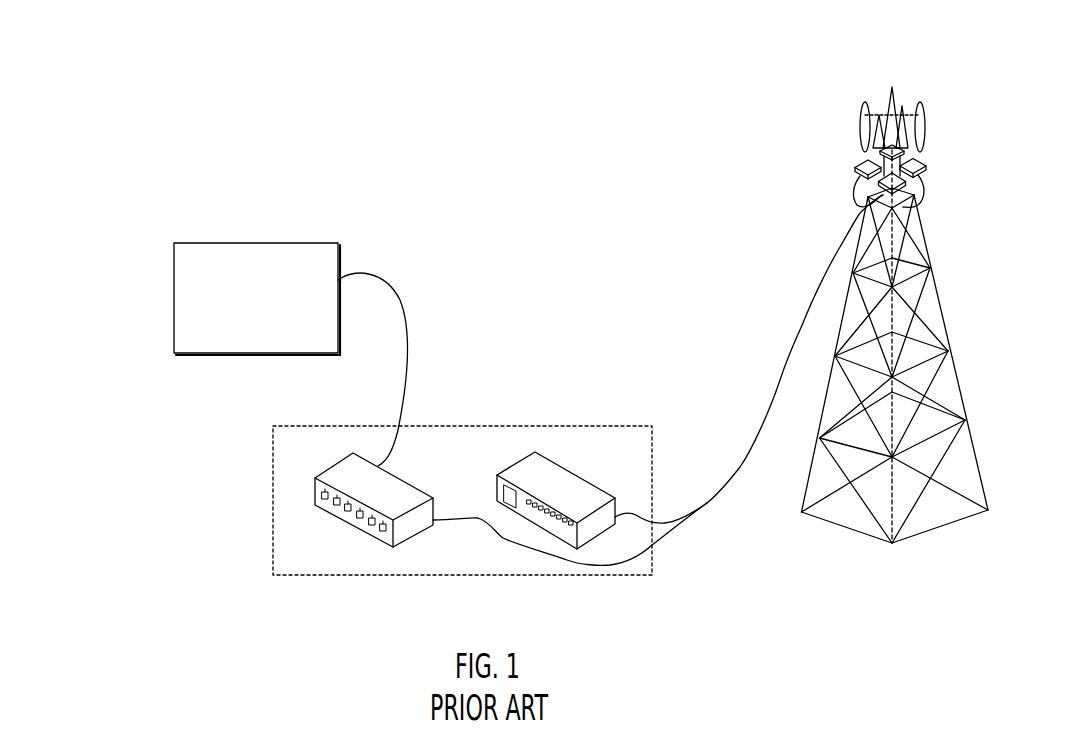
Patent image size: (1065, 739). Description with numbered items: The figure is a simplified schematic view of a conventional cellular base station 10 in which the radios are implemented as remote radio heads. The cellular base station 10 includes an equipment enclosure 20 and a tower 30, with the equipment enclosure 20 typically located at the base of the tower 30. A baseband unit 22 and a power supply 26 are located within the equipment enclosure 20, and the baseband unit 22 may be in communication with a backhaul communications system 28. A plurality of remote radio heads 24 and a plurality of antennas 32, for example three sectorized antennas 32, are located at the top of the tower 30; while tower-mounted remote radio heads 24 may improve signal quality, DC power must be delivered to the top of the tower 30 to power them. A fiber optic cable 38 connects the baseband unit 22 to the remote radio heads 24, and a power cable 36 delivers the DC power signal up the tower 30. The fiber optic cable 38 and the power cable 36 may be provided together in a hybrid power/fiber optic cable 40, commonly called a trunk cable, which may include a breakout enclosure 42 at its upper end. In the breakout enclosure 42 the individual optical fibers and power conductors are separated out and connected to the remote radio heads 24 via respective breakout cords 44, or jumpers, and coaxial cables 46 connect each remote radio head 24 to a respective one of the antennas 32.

The cellular base station 10 is at (552, 329).
The equipment enclosure 20 is at (273, 507).
The baseband unit 22 is at (315, 476).
The remote radio heads 24 is at (968, 162).
The power supply 26 is at (555, 458).
The backhaul communications system 28 is at (265, 344).
The tower 30 is at (957, 381).
The antennas 32 is at (860, 118).
The power cable 36 is at (632, 515).
The fiber optic cable 38 is at (478, 520).
The hybrid power/fiber optic cable 40 is at (802, 323).
The breakout enclosure 42 is at (858, 213).
The breakout cords 44 is at (903, 208).
The coaxial cables 46 is at (903, 107).